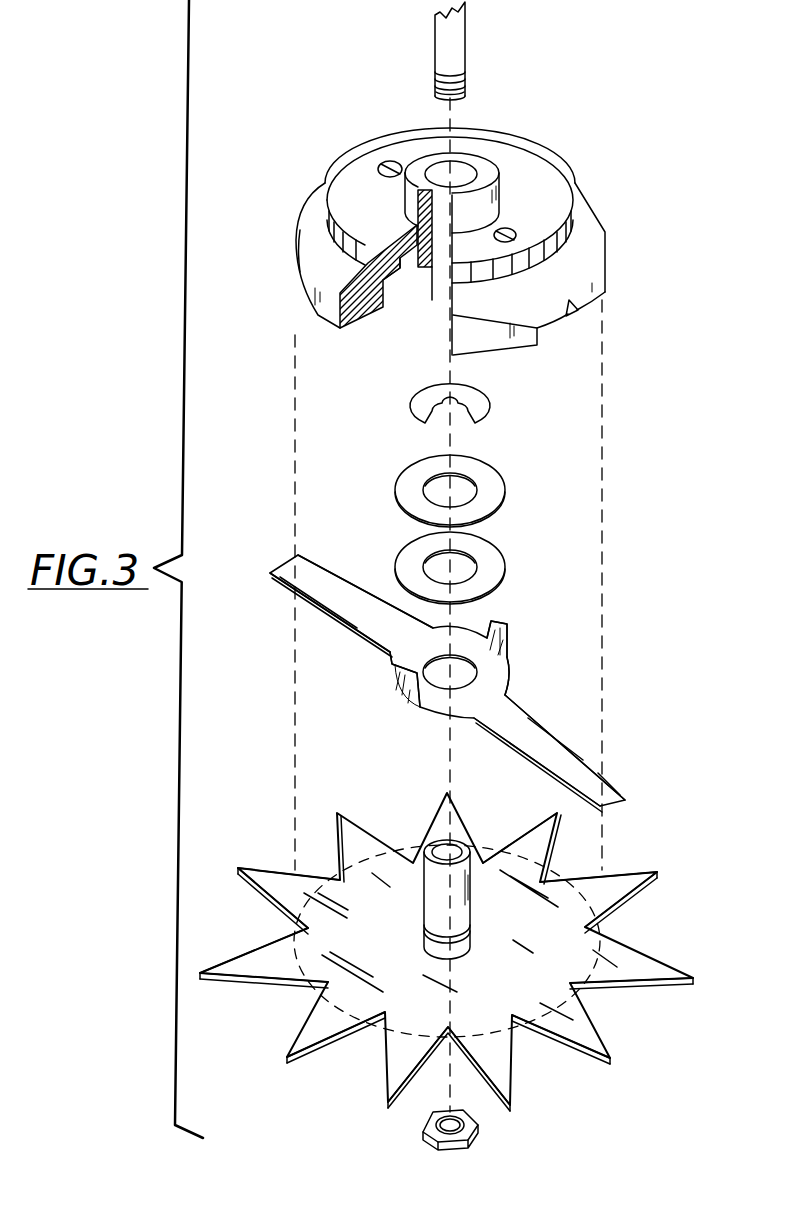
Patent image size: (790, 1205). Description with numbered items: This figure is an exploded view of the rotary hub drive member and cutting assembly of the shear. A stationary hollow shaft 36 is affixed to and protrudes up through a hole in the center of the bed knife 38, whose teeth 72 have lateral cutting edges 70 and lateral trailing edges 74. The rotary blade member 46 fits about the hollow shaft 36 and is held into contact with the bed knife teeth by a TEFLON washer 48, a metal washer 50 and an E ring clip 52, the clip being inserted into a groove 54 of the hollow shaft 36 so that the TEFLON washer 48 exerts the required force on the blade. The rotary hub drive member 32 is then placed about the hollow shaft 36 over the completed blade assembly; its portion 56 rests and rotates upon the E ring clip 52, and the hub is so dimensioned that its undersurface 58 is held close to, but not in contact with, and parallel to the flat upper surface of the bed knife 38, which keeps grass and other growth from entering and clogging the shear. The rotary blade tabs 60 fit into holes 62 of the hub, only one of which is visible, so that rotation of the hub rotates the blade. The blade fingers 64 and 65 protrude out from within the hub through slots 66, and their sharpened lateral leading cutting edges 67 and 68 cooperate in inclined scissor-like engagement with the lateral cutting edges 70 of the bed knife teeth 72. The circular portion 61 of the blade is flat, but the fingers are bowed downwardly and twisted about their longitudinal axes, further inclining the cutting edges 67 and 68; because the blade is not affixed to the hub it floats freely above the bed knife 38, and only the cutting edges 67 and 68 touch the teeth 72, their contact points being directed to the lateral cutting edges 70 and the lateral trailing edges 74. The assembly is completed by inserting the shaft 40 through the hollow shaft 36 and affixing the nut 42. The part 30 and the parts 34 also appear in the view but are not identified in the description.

The housing 30 is at (548, 158).
The rotary hub drive member 32 is at (313, 232).
The screws 34 is at (386, 161).
The stationary hollow shaft 36 is at (432, 900).
The bed knife 38 is at (515, 985).
The shaft 40 is at (435, 34).
The nut 42 is at (480, 1135).
The rotary blade member 46 is at (440, 711).
The TEFLON washer 48 is at (497, 568).
The metal washer 50 is at (497, 486).
The E ring clip 52 is at (490, 400).
The groove 54 is at (470, 925).
The portion of rotary hub drive member 56 is at (447, 250).
The undersurface 58 is at (352, 322).
The rotary blade tabs 60 is at (505, 630).
The circular portion 61 is at (500, 678).
The holes 62 is at (403, 265).
The rotary blade finger 64 is at (298, 563).
The rotary blade finger 65 is at (545, 752).
The slots 66 is at (560, 318).
The sharpened lateral leading cutting edge 67 is at (580, 770).
The sharpened lateral leading cutting edge 68 is at (297, 596).
The lateral cutting edges 70 is at (288, 868).
The bed knife teeth 72 is at (265, 972).
The lateral trailing edges 74 is at (262, 893).